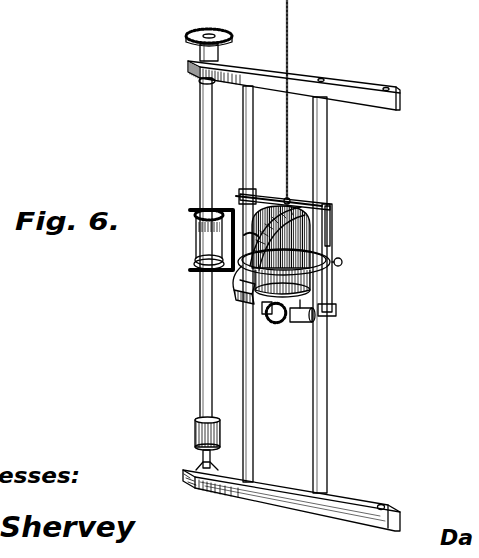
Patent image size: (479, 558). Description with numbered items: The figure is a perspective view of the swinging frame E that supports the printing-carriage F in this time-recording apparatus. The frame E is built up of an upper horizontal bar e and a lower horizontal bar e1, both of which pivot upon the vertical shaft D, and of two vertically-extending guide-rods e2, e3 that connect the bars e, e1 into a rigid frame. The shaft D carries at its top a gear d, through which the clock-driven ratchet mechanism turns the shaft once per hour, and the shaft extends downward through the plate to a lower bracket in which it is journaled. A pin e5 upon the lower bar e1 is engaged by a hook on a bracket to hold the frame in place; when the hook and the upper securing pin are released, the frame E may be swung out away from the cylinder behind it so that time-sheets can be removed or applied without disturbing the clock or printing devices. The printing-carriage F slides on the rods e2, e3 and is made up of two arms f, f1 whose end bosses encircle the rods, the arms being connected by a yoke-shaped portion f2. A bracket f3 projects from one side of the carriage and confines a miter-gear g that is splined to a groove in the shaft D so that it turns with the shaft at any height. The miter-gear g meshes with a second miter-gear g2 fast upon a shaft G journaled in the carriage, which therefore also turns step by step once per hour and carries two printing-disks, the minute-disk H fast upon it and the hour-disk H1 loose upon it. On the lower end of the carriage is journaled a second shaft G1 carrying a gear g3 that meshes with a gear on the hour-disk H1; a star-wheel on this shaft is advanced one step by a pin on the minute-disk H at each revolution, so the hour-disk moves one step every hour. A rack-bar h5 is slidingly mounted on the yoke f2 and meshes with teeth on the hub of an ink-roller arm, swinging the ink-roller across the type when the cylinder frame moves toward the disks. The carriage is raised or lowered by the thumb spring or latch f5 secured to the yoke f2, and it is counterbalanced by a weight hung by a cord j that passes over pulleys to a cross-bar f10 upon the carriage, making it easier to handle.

The gear d is at (188, 35).
The cord j is at (289, 33).
The upper horizontal bar e is at (360, 94).
The lower horizontal bar e1 is at (355, 503).
The guide-rod e2 is at (245, 100).
The guide-rod e3 is at (328, 125).
The pin e5 is at (384, 504).
The shaft D is at (207, 315).
The swinging frame E is at (352, 365).
The printing-carriage F is at (337, 250).
The arm f is at (333, 212).
The arm f1 is at (237, 200).
The yoke-shaped portion f2 is at (307, 277).
The bracket f3 is at (195, 262).
The thumb spring or latch f5 is at (228, 300).
The cross-bar f10 is at (297, 208).
The shaft G is at (342, 261).
The second shaft G1 is at (305, 323).
The miter-gear g is at (196, 224).
The second miter-gear g2 is at (216, 267).
The gear g3 is at (277, 325).
The printing-disk H is at (300, 205).
The printing-disk H1 is at (273, 215).
The rack-bar h5 is at (257, 232).